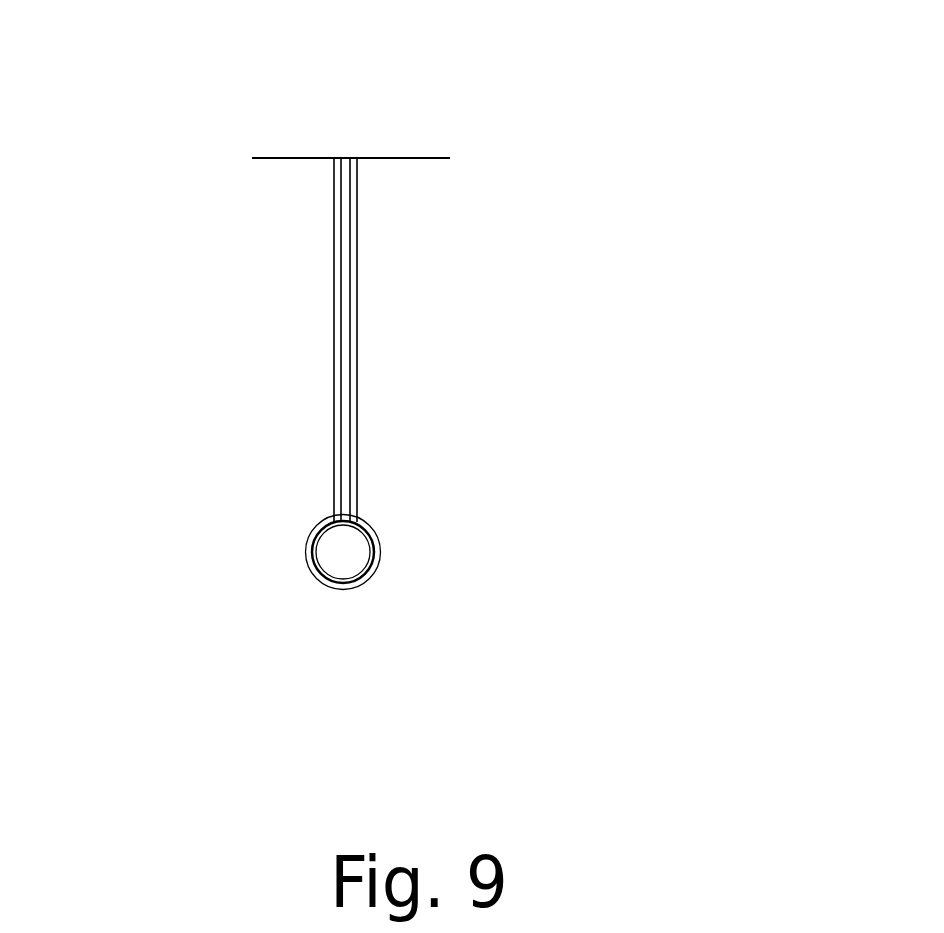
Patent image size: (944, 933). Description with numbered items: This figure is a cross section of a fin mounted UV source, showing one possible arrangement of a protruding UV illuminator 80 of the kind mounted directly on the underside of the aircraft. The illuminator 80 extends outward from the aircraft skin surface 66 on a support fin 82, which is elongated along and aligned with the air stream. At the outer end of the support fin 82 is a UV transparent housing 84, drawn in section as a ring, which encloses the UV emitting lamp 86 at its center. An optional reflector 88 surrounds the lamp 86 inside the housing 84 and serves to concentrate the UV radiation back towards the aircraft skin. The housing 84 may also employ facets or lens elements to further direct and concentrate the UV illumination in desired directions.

The aircraft skin surface 66 is at (403, 158).
The fin mounted source 80 is at (450, 380).
The support fin 82 is at (345, 335).
The housing 84 is at (325, 523).
The UV lamp 86 is at (347, 548).
The reflector 88 is at (310, 557).